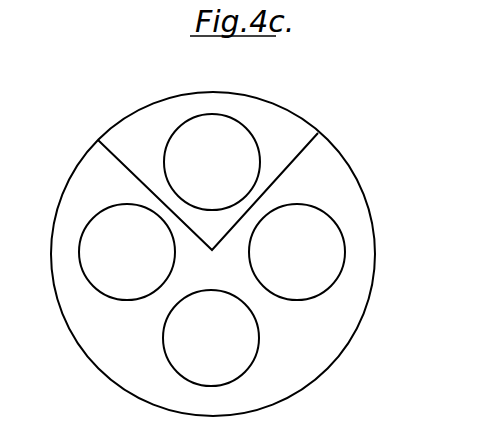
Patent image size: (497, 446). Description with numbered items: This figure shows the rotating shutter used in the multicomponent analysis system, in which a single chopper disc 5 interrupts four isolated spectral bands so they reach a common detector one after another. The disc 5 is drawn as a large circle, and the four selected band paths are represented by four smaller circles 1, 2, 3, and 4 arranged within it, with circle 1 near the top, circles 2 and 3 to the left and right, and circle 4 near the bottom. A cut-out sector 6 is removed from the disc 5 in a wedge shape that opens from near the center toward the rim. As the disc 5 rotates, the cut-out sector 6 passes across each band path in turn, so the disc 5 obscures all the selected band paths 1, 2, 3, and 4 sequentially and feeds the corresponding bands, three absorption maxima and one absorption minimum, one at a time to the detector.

The band path 1 is at (238, 152).
The band path 2 is at (102, 218).
The band path 3 is at (307, 218).
The band path 4 is at (248, 353).
The chopper disc 5 is at (342, 312).
The cut-out sector 6 is at (133, 122).